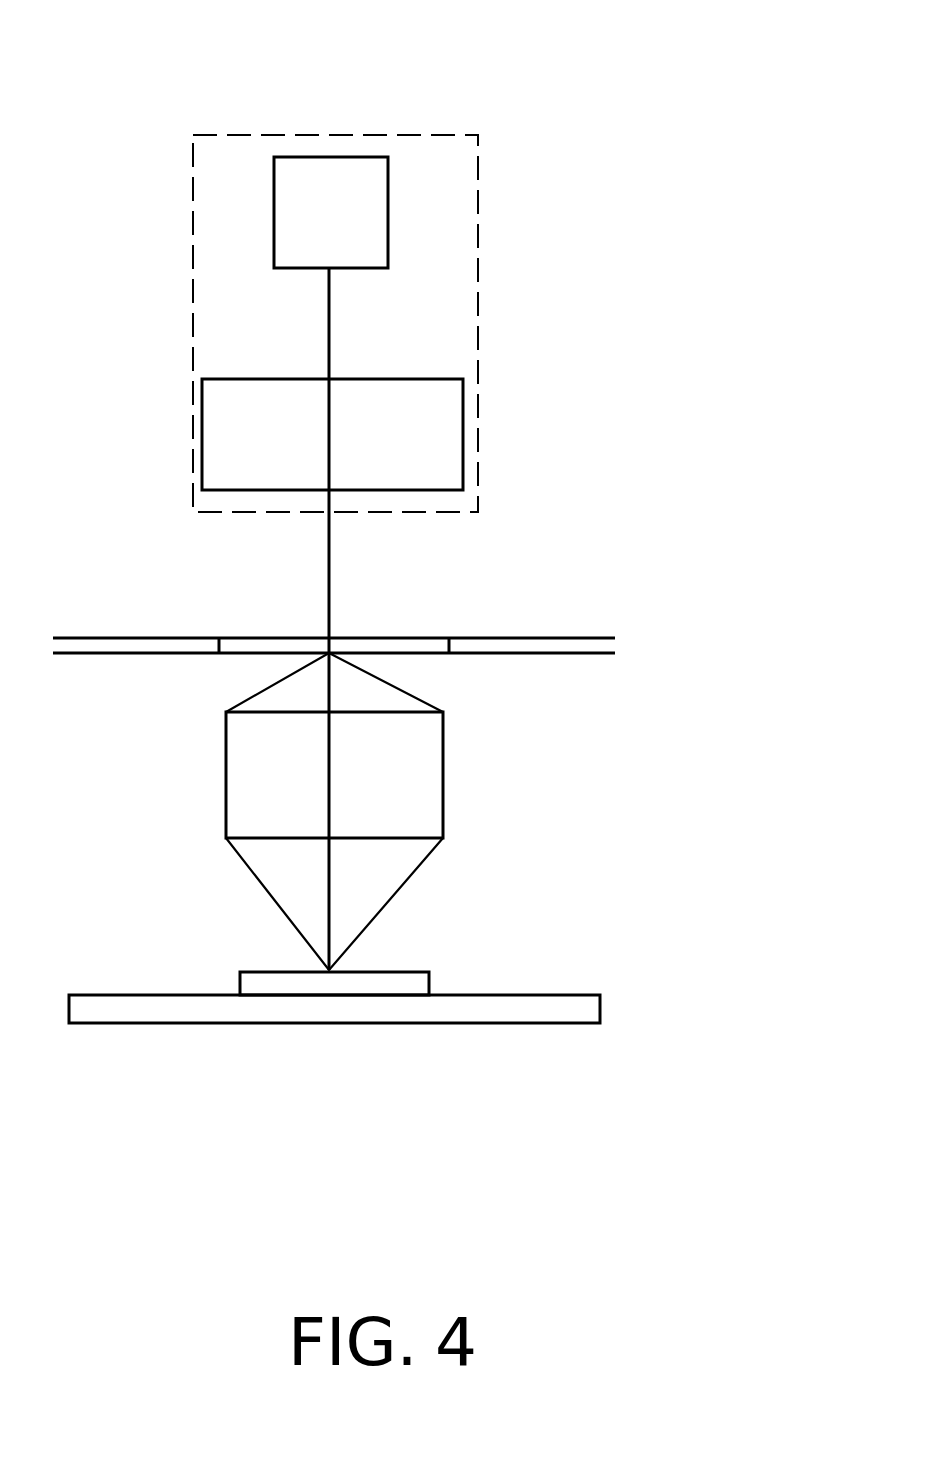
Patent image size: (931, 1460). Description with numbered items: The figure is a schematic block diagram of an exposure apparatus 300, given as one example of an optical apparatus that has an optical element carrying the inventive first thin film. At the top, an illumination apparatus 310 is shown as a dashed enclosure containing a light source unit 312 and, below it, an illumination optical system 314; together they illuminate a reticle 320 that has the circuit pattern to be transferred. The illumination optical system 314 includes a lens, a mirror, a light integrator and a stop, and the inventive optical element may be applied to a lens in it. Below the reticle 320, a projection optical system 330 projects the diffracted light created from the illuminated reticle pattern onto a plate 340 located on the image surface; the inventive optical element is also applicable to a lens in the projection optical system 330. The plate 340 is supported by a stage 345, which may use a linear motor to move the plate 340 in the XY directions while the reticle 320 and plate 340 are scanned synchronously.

The exposure apparatus 300 is at (357, 28).
The illumination apparatus 310 is at (478, 355).
The light source unit 312 is at (388, 229).
The illumination optical system 314 is at (464, 444).
The reticle 320 is at (405, 643).
The projection optical system 330 is at (428, 787).
The plate 340 is at (421, 985).
The stage 345 is at (563, 1012).